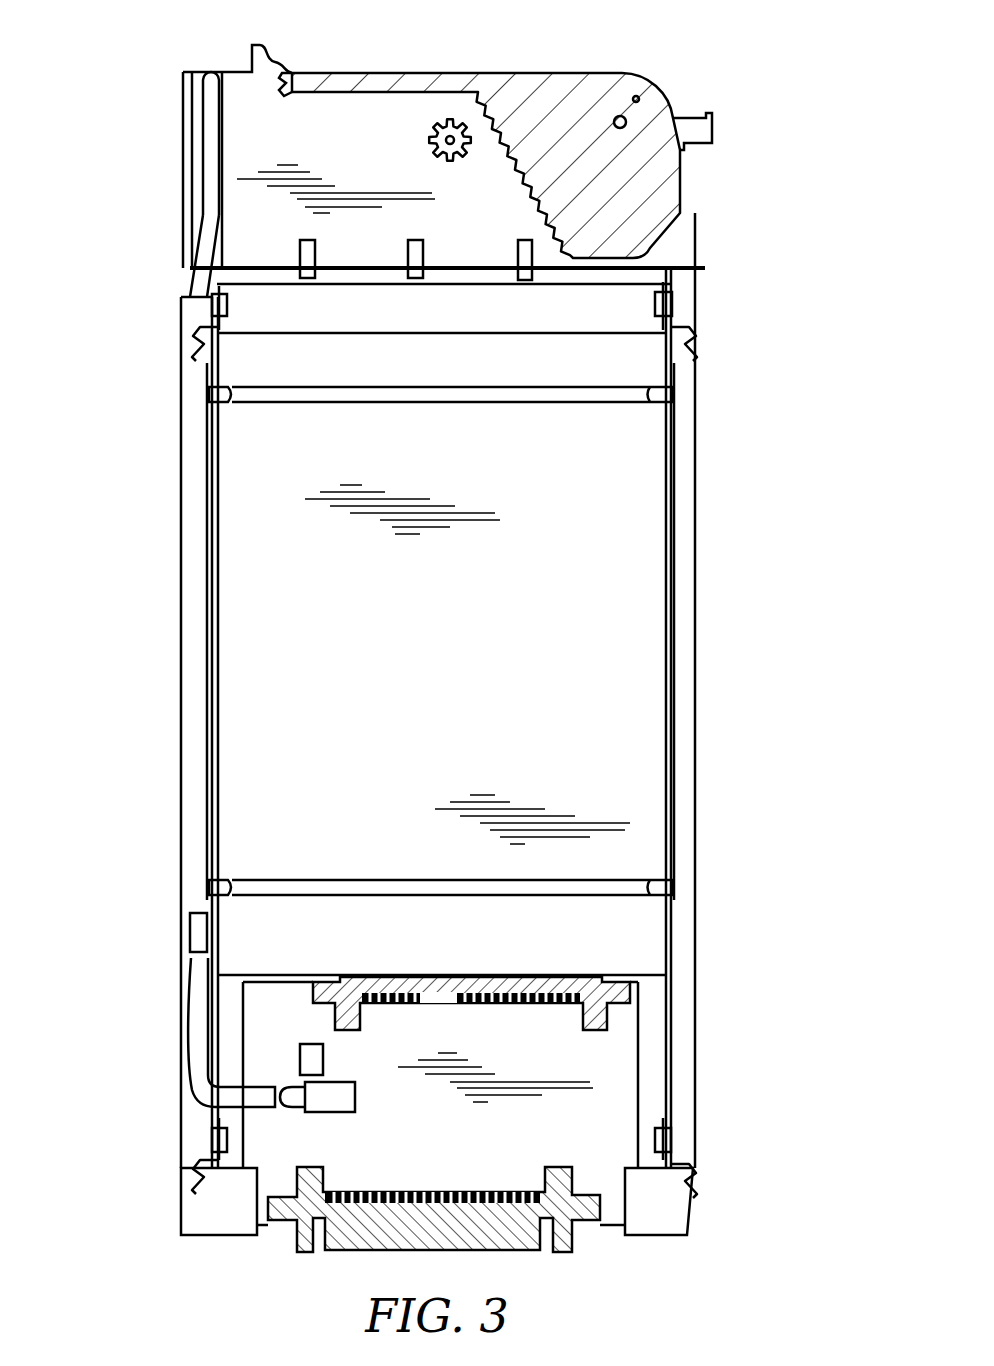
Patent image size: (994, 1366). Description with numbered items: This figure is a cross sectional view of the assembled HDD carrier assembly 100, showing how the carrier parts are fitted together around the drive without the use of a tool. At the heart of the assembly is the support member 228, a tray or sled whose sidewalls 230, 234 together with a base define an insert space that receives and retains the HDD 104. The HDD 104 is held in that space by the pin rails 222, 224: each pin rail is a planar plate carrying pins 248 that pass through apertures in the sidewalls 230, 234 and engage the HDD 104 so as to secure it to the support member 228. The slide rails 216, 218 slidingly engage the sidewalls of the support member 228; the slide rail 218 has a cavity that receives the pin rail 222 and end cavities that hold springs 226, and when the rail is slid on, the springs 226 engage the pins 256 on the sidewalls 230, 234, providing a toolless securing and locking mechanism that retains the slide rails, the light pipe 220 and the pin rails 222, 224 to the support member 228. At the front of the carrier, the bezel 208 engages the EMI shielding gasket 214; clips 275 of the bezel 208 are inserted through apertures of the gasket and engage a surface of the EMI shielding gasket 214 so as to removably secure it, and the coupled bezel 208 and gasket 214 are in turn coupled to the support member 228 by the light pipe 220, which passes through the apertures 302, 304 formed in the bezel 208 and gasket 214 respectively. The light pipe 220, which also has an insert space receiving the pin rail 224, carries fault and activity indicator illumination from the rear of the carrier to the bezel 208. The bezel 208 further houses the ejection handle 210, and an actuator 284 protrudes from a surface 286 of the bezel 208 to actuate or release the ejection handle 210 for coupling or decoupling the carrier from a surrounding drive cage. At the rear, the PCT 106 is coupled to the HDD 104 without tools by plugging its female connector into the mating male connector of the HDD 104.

The HDD carrier assembly 100 is at (722, 66).
The HDD 104 is at (385, 679).
The PCT 106 is at (390, 1147).
The bezel 208 is at (320, 151).
The ejection handle 210 is at (550, 174).
The EMI shielding gasket 214 is at (176, 268).
The slide rail 216 is at (180, 660).
The slide rail 218 is at (698, 573).
The light pipe 220 is at (200, 1040).
The pin rail 222 is at (668, 786).
The pin rail 224 is at (210, 748).
The spring 226 is at (180, 345).
The support member 228 is at (648, 278).
The sidewall 230 is at (668, 689).
The sidewall 234 is at (207, 598).
The pin 248 is at (198, 396).
The pin 256 is at (203, 306).
The clip 275 is at (302, 272).
The actuator 284 is at (246, 46).
The surface 286 is at (185, 70).
The aperture 302 is at (194, 150).
The aperture 304 is at (193, 257).